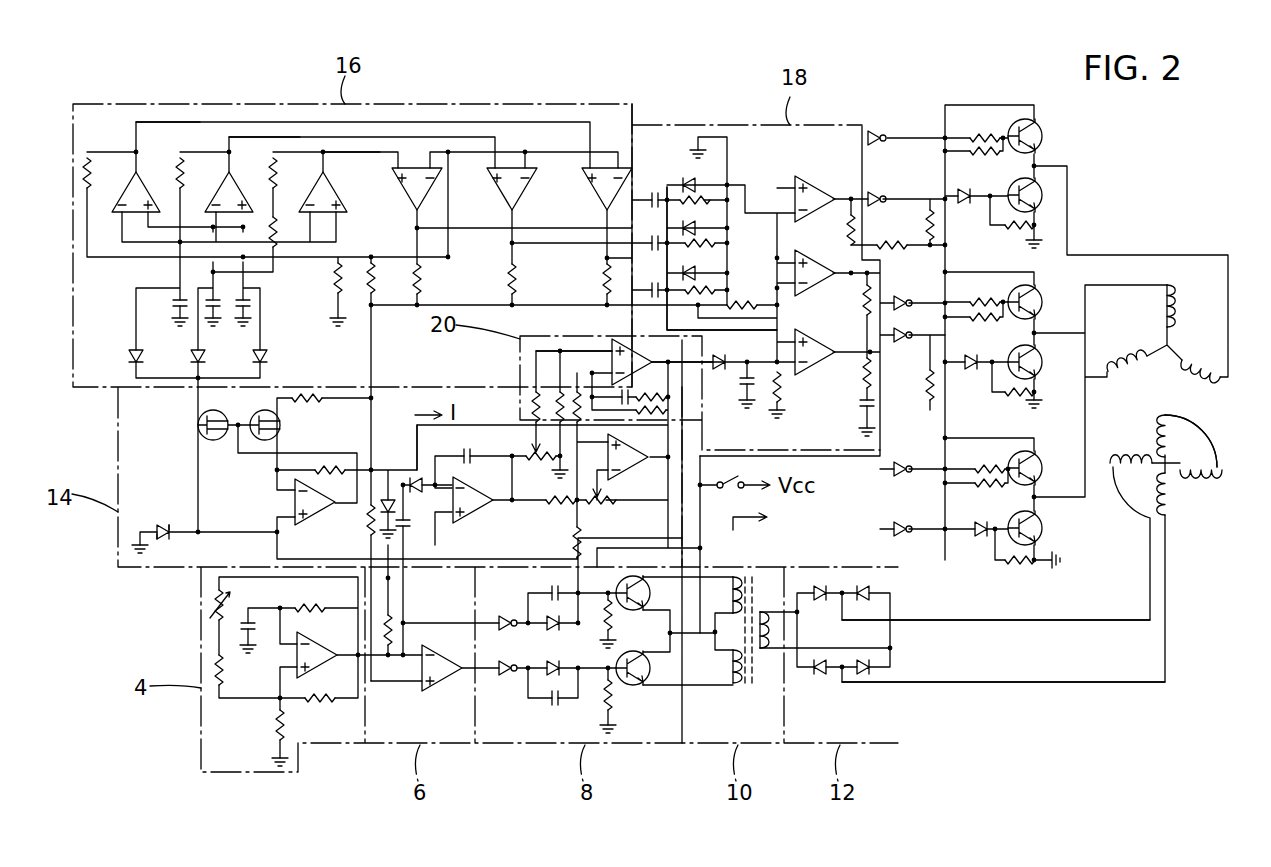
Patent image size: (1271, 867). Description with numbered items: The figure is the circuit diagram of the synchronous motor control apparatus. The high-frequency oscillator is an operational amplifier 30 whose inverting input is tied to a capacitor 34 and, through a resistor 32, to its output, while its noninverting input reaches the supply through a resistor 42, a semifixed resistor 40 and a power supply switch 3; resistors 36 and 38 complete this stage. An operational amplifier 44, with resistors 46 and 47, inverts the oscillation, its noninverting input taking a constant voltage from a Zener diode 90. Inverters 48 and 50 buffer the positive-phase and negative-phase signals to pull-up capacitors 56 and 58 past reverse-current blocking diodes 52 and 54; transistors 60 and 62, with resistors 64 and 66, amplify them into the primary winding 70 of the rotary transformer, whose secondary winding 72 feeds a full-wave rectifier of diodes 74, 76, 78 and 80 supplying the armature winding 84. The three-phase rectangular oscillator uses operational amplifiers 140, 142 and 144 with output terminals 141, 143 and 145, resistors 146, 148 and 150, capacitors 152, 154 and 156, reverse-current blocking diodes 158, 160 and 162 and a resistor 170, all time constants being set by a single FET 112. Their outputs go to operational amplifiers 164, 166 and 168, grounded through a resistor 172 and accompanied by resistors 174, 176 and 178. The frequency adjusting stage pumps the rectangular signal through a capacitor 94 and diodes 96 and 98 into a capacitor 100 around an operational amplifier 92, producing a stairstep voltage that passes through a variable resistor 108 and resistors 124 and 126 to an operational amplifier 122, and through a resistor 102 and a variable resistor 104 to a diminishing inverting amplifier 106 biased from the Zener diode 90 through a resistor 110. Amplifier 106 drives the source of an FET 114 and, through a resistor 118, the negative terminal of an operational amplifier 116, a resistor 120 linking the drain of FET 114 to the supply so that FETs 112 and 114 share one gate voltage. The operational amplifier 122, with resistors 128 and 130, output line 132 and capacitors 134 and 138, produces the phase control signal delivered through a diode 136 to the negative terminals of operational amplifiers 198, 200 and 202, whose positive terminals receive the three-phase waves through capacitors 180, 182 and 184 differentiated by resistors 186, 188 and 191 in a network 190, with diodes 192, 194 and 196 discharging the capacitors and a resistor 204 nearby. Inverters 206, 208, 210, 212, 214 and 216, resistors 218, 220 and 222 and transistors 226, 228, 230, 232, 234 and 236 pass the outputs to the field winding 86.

The power supply switch 3 is at (740, 480).
The operational amplifier 30 is at (320, 640).
The resistor 32 is at (314, 606).
The capacitor 34 is at (254, 628).
The resistor 36 is at (280, 726).
The resistor 38 is at (316, 696).
The semifixed resistor 40 is at (230, 600).
The resistor 42 is at (222, 674).
The operational amplifier 44 is at (446, 666).
The resistor 46 is at (390, 625).
The resistor 47 is at (367, 524).
The inverter 48 is at (506, 616).
The inverter 50 is at (506, 674).
The diode 52 is at (552, 630).
The diode 54 is at (554, 662).
The capacitor 56 is at (560, 600).
The capacitor 58 is at (554, 706).
The transistor 60 is at (632, 578).
The transistor 62 is at (639, 688).
The resistor 64 is at (610, 614).
The resistor 66 is at (606, 698).
The transformer primary winding 70 is at (734, 576).
The transformer secondary winding 72 is at (762, 656).
The diode 74 is at (822, 584).
The diode 76 is at (865, 584).
The diode 78 is at (821, 674).
The diode 80 is at (863, 674).
The armature winding 84 is at (1204, 423).
The field winding 86 is at (1204, 377).
The Zener diode 90 is at (164, 527).
The operational amplifier 92 is at (476, 490).
The capacitor 94 is at (408, 522).
The diode 96 is at (418, 440).
The diode 98 is at (406, 485).
The capacitor 100 is at (469, 454).
The resistor 102 is at (554, 503).
The variable resistor 104 is at (598, 508).
The operational amplifier 106 is at (644, 466).
The variable resistor 108 is at (536, 460).
The resistor 110 is at (576, 541).
The FET 112 is at (216, 440).
The FET 114 is at (280, 428).
The operational amplifier 116 is at (320, 524).
The resistor 118 is at (332, 468).
The resistor 120 is at (314, 400).
The operational amplifier 122 is at (616, 344).
The resistor 124 is at (530, 384).
The resistor 126 is at (558, 350).
The resistor 128 is at (580, 391).
The resistor 130 is at (667, 412).
The output line 132 is at (668, 368).
The capacitor 134 is at (670, 399).
The diode 136 is at (722, 362).
The capacitor 138 is at (750, 394).
The operational amplifier 140 is at (136, 172).
The output line 141 is at (136, 152).
The operational amplifier 142 is at (229, 172).
The output terminal 143 is at (229, 152).
The operational amplifier 144 is at (346, 196).
The output line 145 is at (323, 152).
The resistor 146 is at (89, 180).
The resistor 148 is at (182, 180).
The resistor 150 is at (275, 174).
The capacitor 152 is at (178, 300).
The capacitor 154 is at (222, 311).
The capacitor 156 is at (258, 304).
The diode 158 is at (134, 358).
The diode 160 is at (196, 358).
The diode 162 is at (270, 358).
The operational amplifier 164 is at (408, 204).
The operational amplifier 166 is at (531, 188).
The operational amplifier 168 is at (592, 203).
The resistor 170 is at (371, 258).
The resistor 172 is at (338, 282).
The resistor 174 is at (421, 286).
The resistor 176 is at (512, 284).
The resistor 178 is at (607, 284).
The capacitor 180 is at (652, 196).
The capacitor 182 is at (654, 242).
The capacitor 184 is at (654, 288).
The resistor 186 is at (704, 184).
The resistor 188 is at (717, 245).
The bias network 190 is at (698, 302).
The resistor 191 is at (744, 306).
The diode 192 is at (698, 142).
The diode 194 is at (717, 228).
The diode 196 is at (717, 276).
The operational amplifier 198 is at (810, 178).
The operational amplifier 200 is at (813, 242).
The operational amplifier 202 is at (812, 371).
The resistor 204 is at (782, 402).
The inverter 206 is at (877, 130).
The inverter 208 is at (881, 190).
The inverter 210 is at (907, 298).
The inverter 212 is at (905, 344).
The inverter 214 is at (906, 485).
The inverter 216 is at (910, 542).
The resistor 218 is at (859, 224).
The resistor 220 is at (870, 286).
The resistor 222 is at (872, 390).
The transistor 226 is at (1042, 135).
The transistor 228 is at (1008, 184).
The transistor 230 is at (1043, 294).
The transistor 232 is at (1042, 360).
The transistor 234 is at (1034, 456).
The transistor 236 is at (1042, 528).